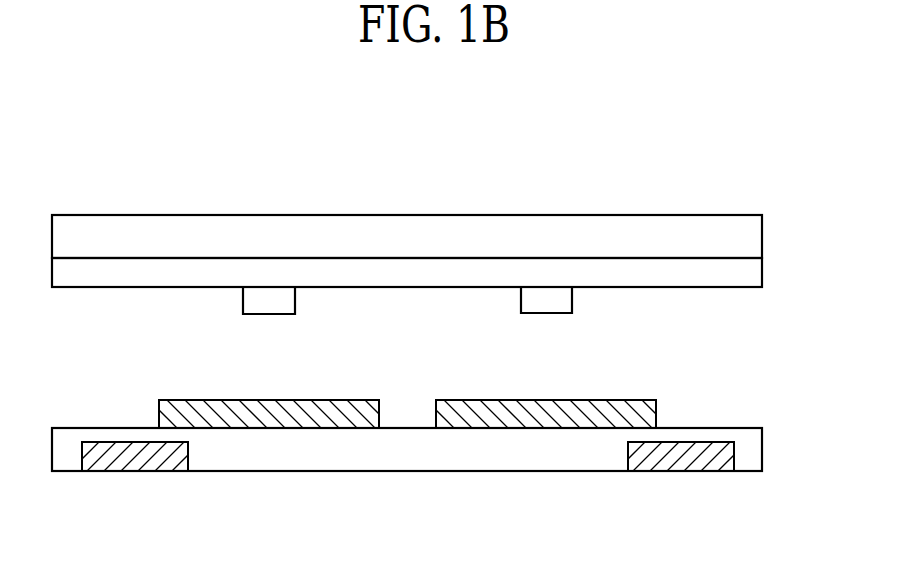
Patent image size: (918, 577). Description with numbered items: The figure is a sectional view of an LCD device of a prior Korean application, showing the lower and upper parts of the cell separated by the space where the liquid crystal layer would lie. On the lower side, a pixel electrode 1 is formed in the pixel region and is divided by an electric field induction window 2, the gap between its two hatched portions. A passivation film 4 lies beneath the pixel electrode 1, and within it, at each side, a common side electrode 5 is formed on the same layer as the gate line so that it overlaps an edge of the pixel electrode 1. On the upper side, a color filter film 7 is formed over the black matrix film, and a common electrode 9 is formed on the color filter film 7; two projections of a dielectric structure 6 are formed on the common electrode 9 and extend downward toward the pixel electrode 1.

The pixel electrode 1 is at (650, 412).
The electric field induction window 2 is at (406, 410).
The passivation film 4 is at (755, 447).
The common side electrode 5 is at (150, 463).
The dielectric structure 6 is at (562, 298).
The color filter film 7 is at (755, 237).
The common electrode 9 is at (755, 270).